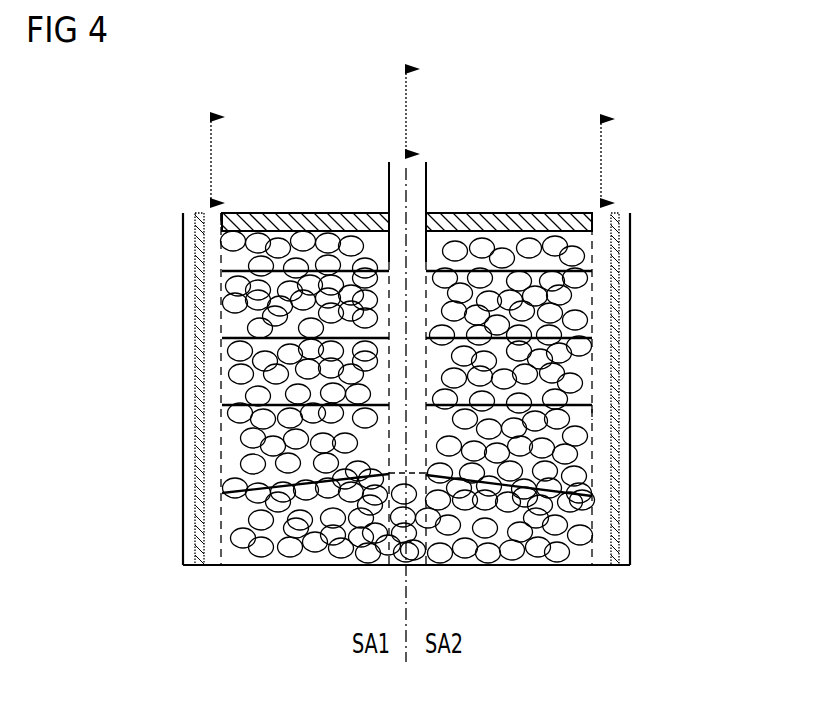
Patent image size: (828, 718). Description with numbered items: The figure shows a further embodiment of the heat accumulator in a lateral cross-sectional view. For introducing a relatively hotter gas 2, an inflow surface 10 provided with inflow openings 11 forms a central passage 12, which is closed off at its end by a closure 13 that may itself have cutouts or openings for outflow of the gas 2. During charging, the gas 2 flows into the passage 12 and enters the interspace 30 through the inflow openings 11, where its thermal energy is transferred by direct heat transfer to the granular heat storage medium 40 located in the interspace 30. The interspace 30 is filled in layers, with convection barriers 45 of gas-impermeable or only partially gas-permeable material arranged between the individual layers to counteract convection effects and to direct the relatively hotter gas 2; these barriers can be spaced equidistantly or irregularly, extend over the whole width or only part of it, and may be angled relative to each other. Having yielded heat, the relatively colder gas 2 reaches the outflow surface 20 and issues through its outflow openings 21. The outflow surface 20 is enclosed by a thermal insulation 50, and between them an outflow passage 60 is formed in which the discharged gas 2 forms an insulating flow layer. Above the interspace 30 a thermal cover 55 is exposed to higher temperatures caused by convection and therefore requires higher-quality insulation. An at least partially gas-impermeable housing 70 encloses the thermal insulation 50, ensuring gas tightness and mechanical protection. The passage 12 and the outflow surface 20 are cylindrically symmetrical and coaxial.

The gas 2 is at (212, 138).
The inflow surface 10 is at (427, 257).
The inflow openings 11 is at (428, 267).
The passage 12 is at (388, 233).
The closure 13 is at (420, 470).
The outflow surface 20 is at (407, 403).
The outflow openings 21 is at (222, 432).
The interspace 30 is at (322, 237).
The heat storage medium 40 is at (278, 236).
The convection barriers 45 is at (619, 415).
The thermal insulation 50 is at (205, 240).
The thermal cover 55 is at (525, 220).
The outflow passage 60 is at (207, 300).
The housing 70 is at (185, 546).